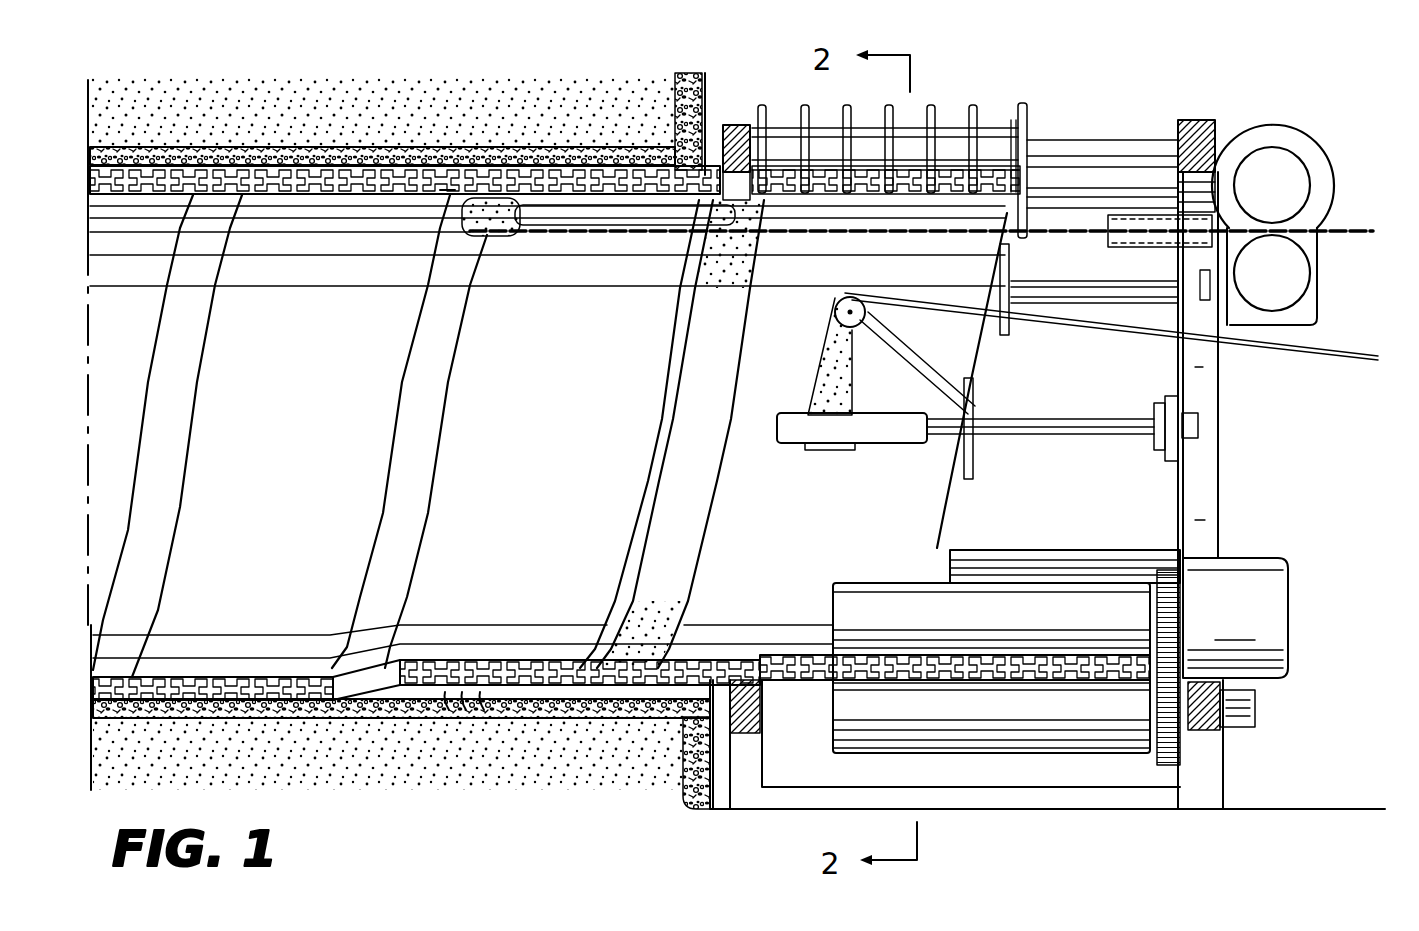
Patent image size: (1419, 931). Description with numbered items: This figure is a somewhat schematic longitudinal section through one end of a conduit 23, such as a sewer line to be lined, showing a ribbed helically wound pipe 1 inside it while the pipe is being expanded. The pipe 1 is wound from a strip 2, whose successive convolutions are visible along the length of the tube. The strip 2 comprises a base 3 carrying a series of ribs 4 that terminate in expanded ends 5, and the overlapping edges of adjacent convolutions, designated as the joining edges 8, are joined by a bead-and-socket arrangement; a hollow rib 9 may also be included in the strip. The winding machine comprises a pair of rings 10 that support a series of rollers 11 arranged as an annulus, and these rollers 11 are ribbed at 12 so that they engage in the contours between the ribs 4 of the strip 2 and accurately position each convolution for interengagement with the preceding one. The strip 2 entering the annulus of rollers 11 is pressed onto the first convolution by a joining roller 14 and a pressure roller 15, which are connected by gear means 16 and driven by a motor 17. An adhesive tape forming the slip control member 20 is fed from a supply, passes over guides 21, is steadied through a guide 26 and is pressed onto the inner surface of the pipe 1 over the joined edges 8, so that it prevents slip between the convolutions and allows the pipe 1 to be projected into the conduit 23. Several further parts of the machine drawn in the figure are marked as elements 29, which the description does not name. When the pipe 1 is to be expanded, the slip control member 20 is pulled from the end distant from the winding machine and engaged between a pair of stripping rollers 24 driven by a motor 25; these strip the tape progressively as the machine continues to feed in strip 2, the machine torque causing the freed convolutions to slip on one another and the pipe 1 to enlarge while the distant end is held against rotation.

The pipe 1 is at (248, 482).
The strip 2 is at (330, 210).
The base 3 is at (482, 694).
The ribs 4 is at (445, 694).
The expanded ends 5 is at (462, 694).
The joining edges 8 is at (498, 190).
The hollow rib 9 is at (446, 190).
The rings 10 is at (735, 125).
The rollers 11 is at (996, 132).
The ribs of rollers 12 is at (1024, 104).
The joining roller 14 is at (985, 752).
The pressure roller 15 is at (1013, 603).
The gear means 16 is at (1170, 767).
The motor 17 is at (1237, 588).
The slip control member 20 is at (590, 247).
The guides 21 is at (860, 376).
The conduit 23 is at (562, 146).
The stripping rollers 24 is at (1280, 170).
The motor 25 is at (1307, 137).
The guide 26 is at (1127, 212).
The guide 29 is at (497, 240).